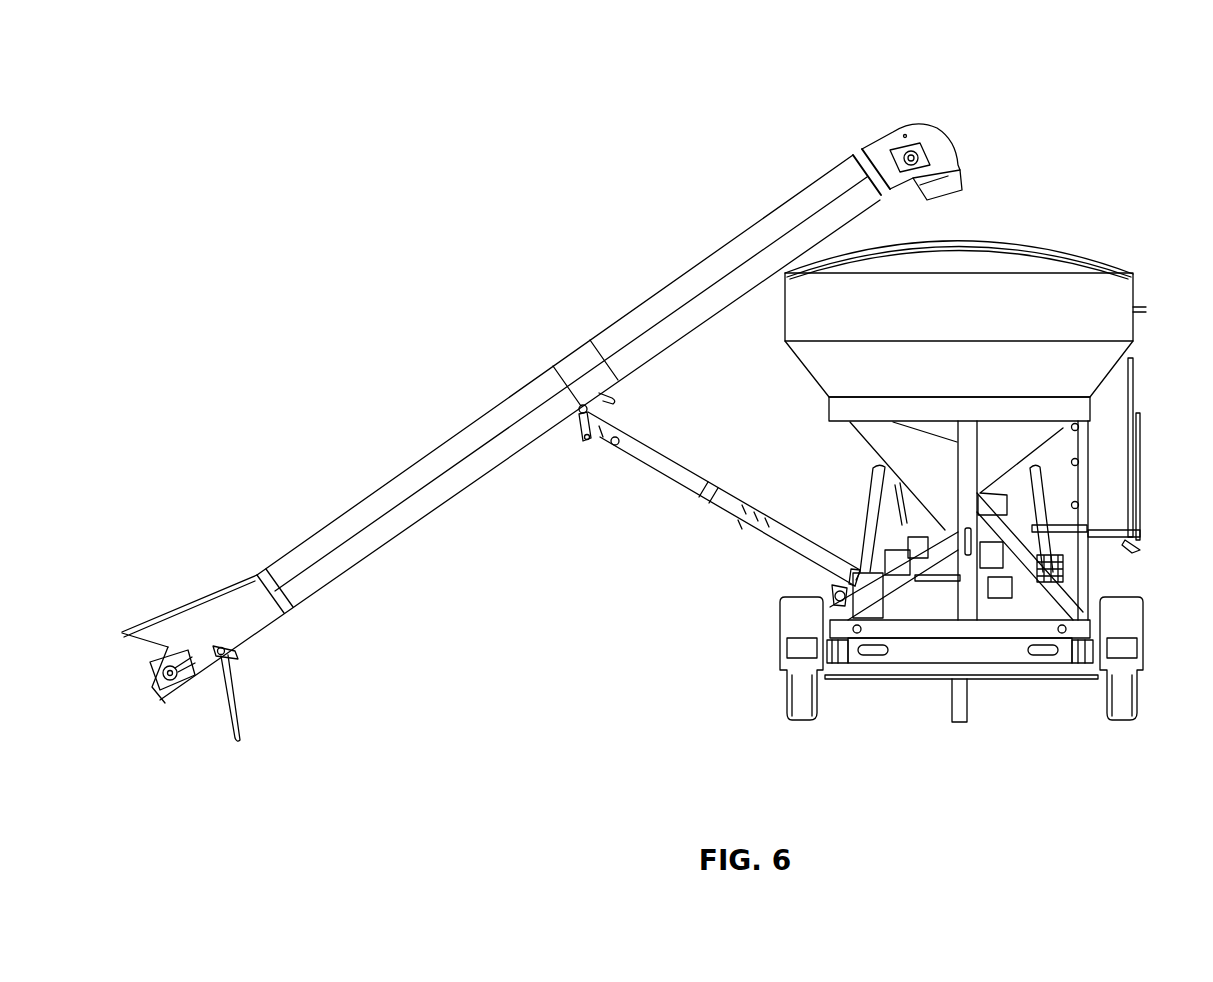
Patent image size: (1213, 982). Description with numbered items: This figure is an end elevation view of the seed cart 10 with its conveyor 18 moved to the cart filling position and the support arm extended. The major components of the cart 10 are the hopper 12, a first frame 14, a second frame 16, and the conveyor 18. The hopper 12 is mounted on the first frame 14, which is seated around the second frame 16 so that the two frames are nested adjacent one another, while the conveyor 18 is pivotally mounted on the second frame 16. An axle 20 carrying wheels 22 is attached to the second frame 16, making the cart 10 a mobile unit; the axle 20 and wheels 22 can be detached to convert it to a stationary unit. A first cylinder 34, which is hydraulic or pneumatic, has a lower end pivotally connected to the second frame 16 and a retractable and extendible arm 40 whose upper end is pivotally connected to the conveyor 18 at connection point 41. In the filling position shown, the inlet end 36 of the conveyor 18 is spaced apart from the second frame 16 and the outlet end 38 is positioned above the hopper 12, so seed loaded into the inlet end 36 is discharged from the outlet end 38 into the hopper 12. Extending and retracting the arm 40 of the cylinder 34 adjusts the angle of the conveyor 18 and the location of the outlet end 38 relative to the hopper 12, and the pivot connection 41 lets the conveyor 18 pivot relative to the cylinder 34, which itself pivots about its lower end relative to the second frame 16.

The seed cart 10 is at (1032, 76).
The hopper 12 is at (1118, 293).
The first frame 14 is at (960, 630).
The second frame 16 is at (933, 650).
The conveyor 18 is at (690, 273).
The axle 20 is at (1015, 670).
The wheels 22 is at (803, 722).
The first cylinder 34 is at (787, 528).
The inlet end 36 is at (185, 605).
The outlet end 38 is at (952, 197).
The arm 40 is at (667, 458).
The connection point 41 is at (582, 441).